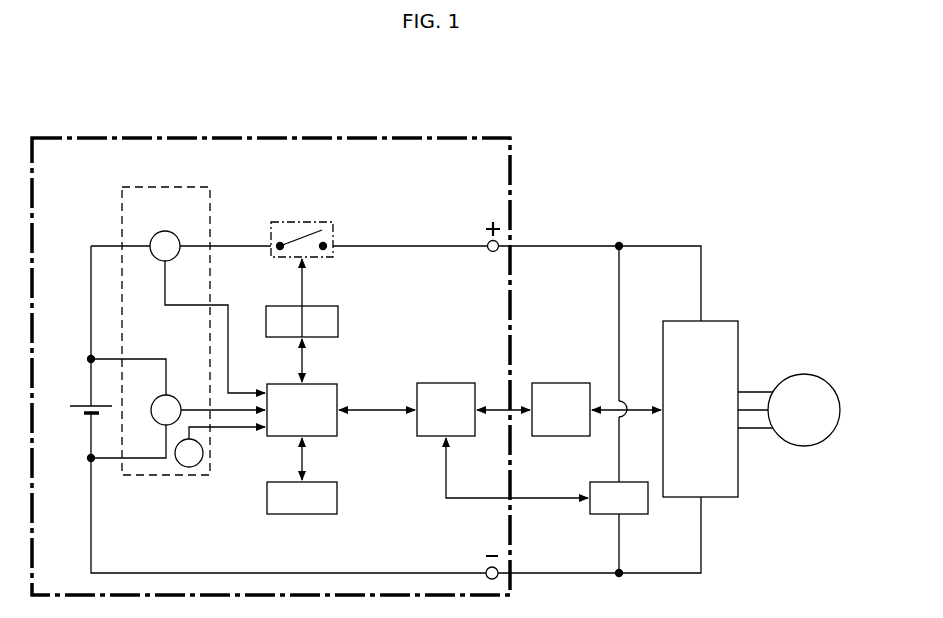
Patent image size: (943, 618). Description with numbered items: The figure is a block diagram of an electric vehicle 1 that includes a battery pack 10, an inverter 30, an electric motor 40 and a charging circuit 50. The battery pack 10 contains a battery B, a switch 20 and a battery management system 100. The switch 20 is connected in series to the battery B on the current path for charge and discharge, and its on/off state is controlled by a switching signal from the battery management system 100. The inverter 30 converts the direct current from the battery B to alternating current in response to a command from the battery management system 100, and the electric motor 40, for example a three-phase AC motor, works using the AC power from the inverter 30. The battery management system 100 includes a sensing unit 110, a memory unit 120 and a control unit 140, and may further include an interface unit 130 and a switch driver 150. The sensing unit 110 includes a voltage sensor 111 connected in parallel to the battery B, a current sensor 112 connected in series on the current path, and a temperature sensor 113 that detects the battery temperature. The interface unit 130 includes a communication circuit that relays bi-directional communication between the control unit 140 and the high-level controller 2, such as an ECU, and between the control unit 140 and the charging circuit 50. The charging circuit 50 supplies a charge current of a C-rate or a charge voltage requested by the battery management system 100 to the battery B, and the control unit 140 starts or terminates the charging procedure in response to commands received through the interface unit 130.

The electric vehicle 1 is at (78, 102).
The battery pack 10 is at (468, 137).
The battery B is at (84, 405).
The sensing unit 110 is at (190, 187).
The voltage sensor 111 is at (178, 400).
The current sensor 112 is at (165, 231).
The temperature sensor 113 is at (203, 452).
The switch 20 is at (300, 222).
The battery management system 100 is at (354, 301).
The switch driver 150 is at (338, 319).
The control unit 140 is at (337, 391).
The memory unit 120 is at (337, 497).
The interface unit 130 is at (455, 383).
The high-level controller 2 is at (569, 383).
The charging circuit 50 is at (634, 482).
The inverter 30 is at (722, 321).
The electric motor 40 is at (804, 374).